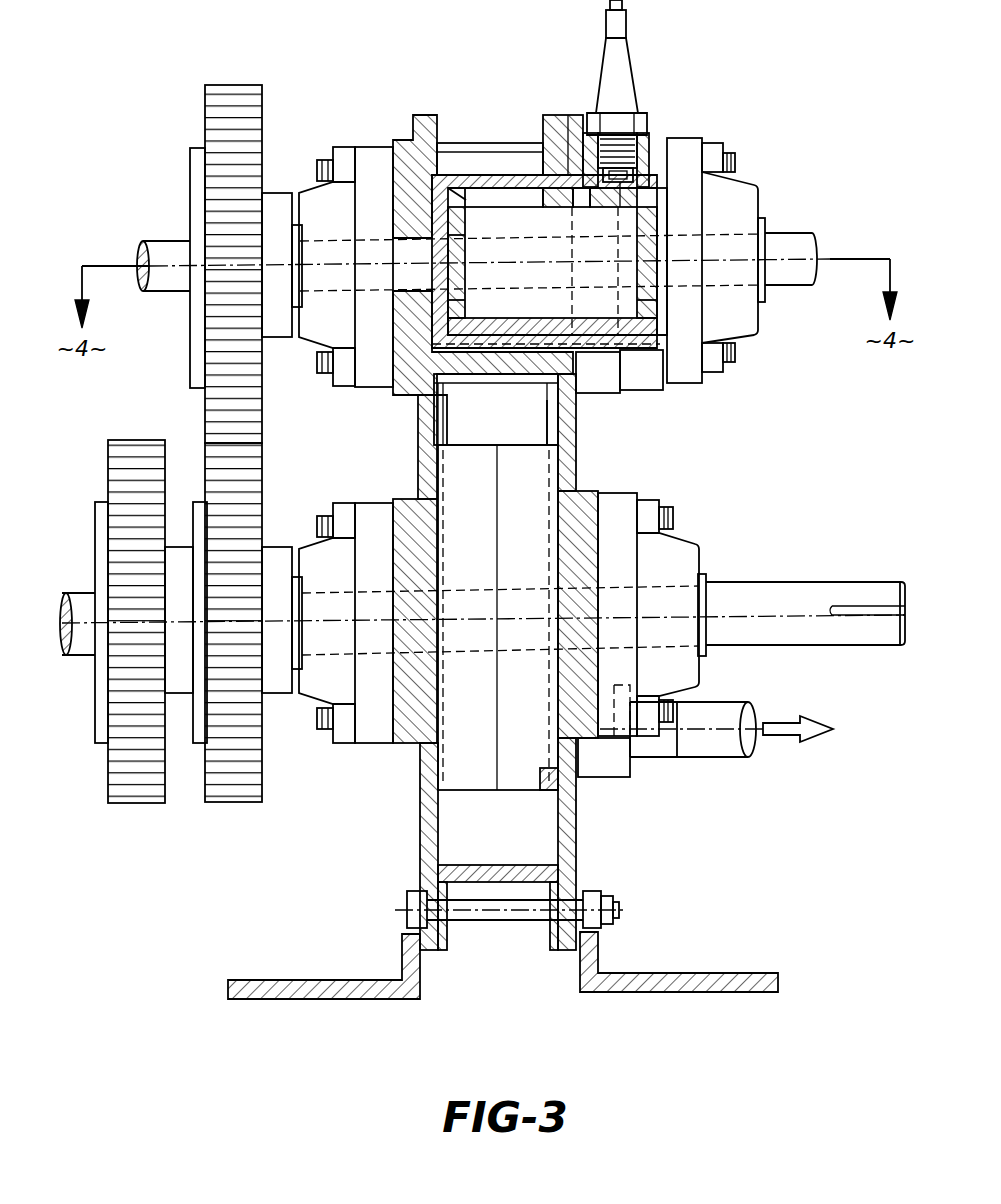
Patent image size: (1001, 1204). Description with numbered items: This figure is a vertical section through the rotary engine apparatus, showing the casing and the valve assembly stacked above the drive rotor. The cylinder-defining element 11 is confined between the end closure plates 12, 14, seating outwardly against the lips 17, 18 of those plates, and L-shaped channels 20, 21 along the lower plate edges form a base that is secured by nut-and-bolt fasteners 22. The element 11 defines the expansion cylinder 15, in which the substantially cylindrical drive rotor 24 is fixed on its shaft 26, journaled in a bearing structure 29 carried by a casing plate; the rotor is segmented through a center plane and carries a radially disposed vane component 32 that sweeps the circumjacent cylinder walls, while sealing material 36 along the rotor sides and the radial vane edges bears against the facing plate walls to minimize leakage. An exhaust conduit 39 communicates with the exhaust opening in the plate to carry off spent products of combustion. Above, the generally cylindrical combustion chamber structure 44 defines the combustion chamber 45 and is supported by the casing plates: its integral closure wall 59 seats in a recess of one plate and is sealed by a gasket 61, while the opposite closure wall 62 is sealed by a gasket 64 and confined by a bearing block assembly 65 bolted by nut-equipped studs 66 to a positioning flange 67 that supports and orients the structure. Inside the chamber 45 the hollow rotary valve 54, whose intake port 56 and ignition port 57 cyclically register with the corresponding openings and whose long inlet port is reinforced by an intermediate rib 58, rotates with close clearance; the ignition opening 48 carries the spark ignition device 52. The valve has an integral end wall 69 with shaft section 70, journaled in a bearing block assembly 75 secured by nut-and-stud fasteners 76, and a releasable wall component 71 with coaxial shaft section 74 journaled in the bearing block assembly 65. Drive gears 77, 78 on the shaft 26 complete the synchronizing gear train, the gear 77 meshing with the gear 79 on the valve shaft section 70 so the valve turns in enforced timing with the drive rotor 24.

The cylinder-defining element 11 is at (500, 884).
The end closure plate 12 is at (556, 956).
The end closure plate 14 is at (440, 952).
The expansion cylinder 15 is at (573, 834).
The lip 17 is at (565, 890).
The lip 18 is at (432, 890).
The L-shaped channel 20 is at (695, 993).
The L-shaped channel 21 is at (321, 999).
The nut-and-bolt fastener 22 is at (617, 911).
The drive rotor 24 is at (458, 556).
The drive rotor shaft 26 is at (72, 598).
The bearing structure 29 is at (302, 549).
The vane component 32 is at (483, 420).
The seal 36 is at (437, 403).
The exhaust conduit 39 is at (703, 746).
The combustion chamber structure 44 is at (483, 176).
The combustion chamber 45 is at (567, 310).
The ignition opening 48 is at (622, 193).
The spark ignition device 52 is at (630, 68).
The rotary valve 54 is at (508, 320).
The intake port 56 is at (470, 200).
The ignition port 57 is at (598, 198).
The intermediate rib 58 is at (521, 207).
The closure wall 59 is at (465, 322).
The gasket 61 is at (432, 193).
The closure wall 62 is at (640, 313).
The gasket 64 is at (664, 340).
The bearing block assembly 65 is at (752, 198).
The nut-equipped stud 66 is at (736, 163).
The positioning flange 67 is at (578, 118).
The end wall 69 is at (460, 283).
The shaft section 70 is at (165, 246).
The wall component 71 is at (647, 260).
The shaft section 74 is at (800, 238).
The bearing block assembly 75 is at (300, 193).
The nut-and-stud fastener 76 is at (336, 154).
The drive gear 77 is at (216, 804).
The drive gear 78 is at (112, 806).
The gear 79 is at (220, 88).